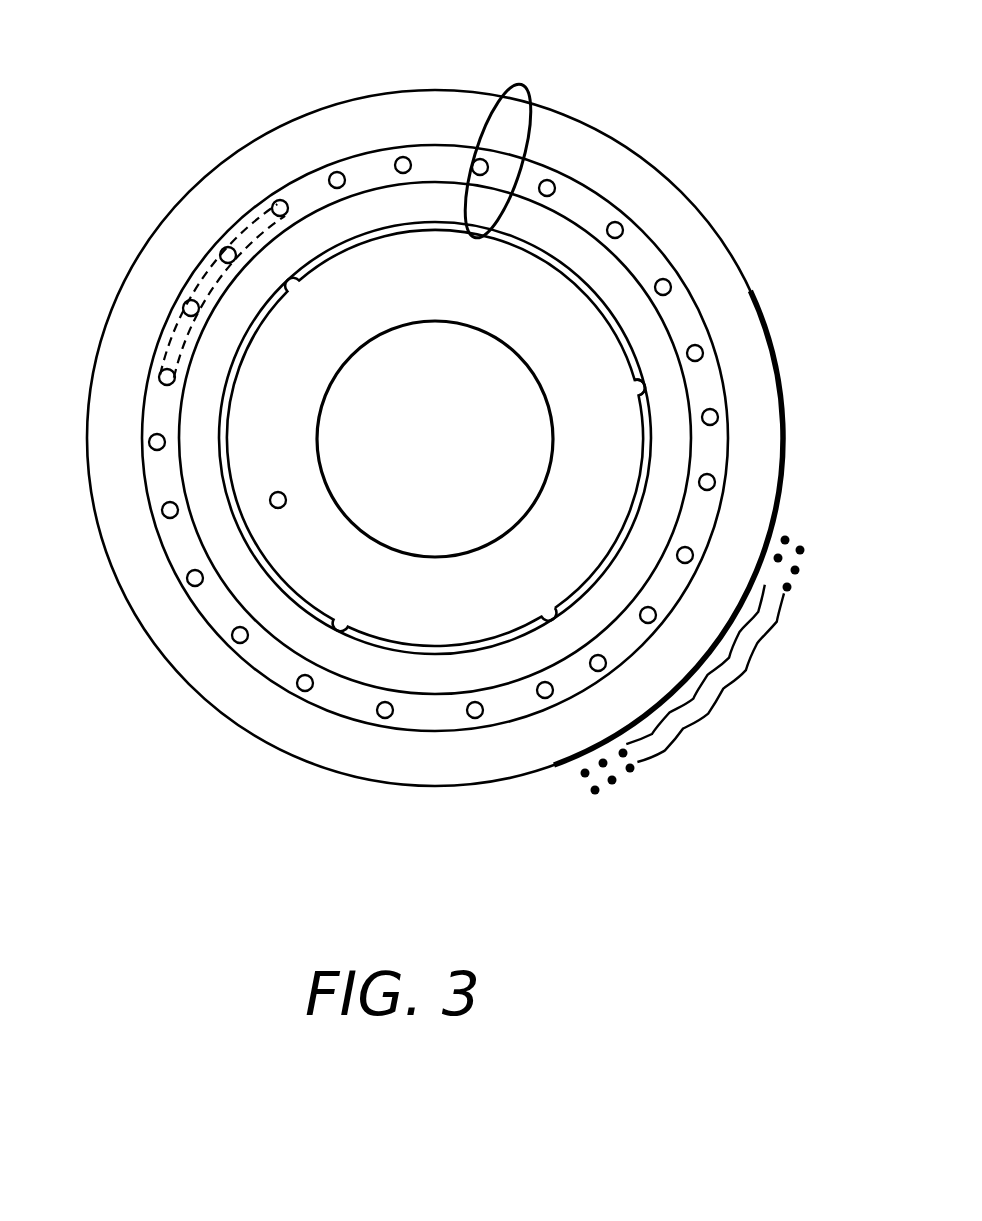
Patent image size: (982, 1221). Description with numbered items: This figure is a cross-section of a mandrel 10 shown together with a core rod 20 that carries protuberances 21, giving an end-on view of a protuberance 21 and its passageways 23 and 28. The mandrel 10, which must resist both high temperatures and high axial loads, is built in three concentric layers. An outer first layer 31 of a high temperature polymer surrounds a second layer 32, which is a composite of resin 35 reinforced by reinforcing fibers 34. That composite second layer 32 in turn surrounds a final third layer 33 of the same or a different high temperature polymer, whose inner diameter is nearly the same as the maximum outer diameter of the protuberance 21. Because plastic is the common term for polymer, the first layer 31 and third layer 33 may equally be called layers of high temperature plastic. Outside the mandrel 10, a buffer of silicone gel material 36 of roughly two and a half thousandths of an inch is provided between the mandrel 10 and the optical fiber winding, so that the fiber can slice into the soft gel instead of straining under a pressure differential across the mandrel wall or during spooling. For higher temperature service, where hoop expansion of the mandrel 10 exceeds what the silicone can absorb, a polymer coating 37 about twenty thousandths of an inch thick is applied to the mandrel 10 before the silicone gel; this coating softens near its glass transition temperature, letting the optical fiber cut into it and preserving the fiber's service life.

The mandrel 10 is at (536, 75).
The core rod 20 is at (458, 439).
The protuberance 21 is at (302, 374).
The passageway 23 is at (283, 507).
The passageway 28 is at (626, 390).
The first layer 31 is at (722, 291).
The second layer 32 is at (712, 448).
The third layer 33 is at (510, 663).
The reinforcing fibers 34 is at (162, 372).
The resin 35 is at (205, 276).
The silicone gel material 36 is at (717, 683).
The polymer coating 37 is at (730, 637).